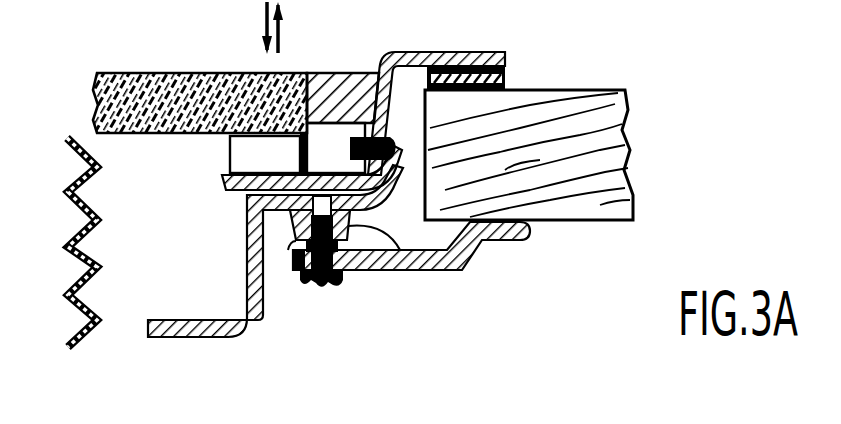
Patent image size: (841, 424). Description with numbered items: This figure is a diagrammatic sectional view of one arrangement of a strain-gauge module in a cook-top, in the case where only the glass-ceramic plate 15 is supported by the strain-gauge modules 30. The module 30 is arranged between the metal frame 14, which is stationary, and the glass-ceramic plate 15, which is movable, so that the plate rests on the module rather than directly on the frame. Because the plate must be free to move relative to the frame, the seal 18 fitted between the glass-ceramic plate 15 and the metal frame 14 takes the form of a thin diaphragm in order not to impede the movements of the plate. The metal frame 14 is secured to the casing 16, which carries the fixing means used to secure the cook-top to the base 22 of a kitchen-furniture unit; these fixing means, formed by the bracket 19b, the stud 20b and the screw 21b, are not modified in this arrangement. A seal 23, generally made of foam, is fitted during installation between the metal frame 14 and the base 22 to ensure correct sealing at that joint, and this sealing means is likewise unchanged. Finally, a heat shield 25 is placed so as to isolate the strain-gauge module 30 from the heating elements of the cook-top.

The metal frame 14 is at (427, 53).
The glass-ceramic plate 15 is at (177, 73).
The casing 16 is at (213, 337).
The elastomer seal 18 is at (337, 73).
The bracket 19b is at (474, 253).
The stud 20b is at (415, 252).
The screw 21b is at (333, 275).
The base 22 is at (588, 205).
The seal 23 is at (505, 71).
The heat shield 25 is at (72, 226).
The strain-gauge module 30 is at (230, 153).